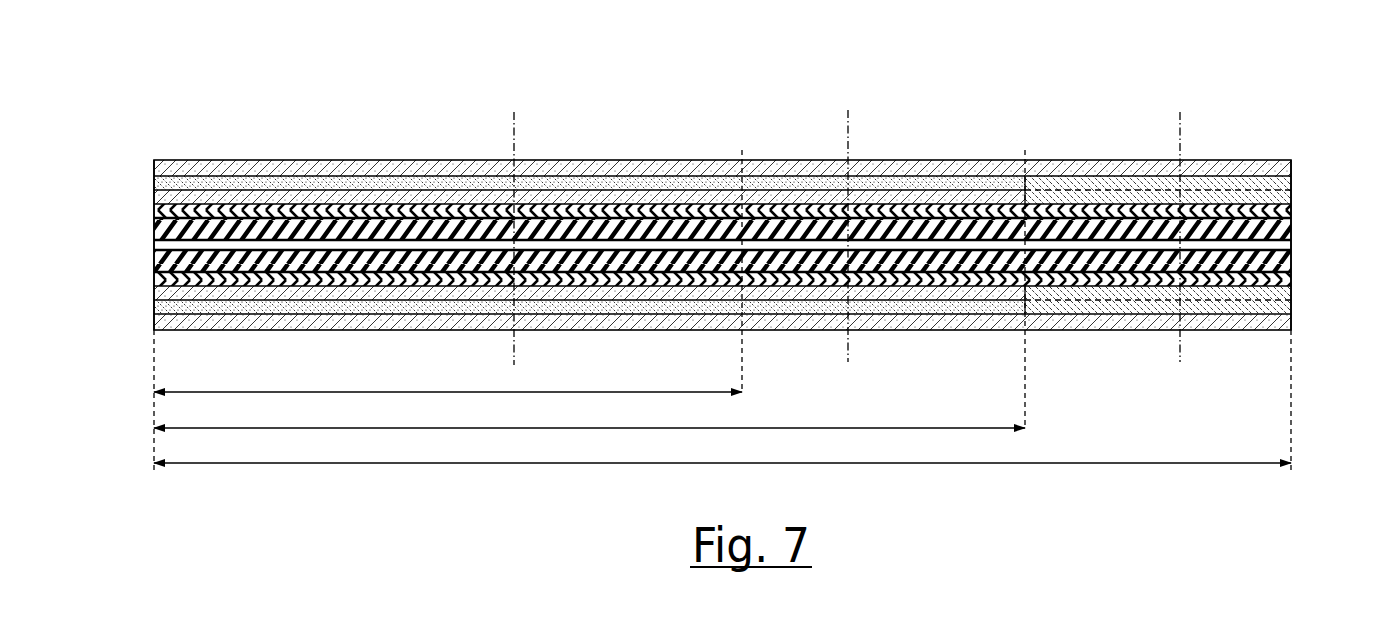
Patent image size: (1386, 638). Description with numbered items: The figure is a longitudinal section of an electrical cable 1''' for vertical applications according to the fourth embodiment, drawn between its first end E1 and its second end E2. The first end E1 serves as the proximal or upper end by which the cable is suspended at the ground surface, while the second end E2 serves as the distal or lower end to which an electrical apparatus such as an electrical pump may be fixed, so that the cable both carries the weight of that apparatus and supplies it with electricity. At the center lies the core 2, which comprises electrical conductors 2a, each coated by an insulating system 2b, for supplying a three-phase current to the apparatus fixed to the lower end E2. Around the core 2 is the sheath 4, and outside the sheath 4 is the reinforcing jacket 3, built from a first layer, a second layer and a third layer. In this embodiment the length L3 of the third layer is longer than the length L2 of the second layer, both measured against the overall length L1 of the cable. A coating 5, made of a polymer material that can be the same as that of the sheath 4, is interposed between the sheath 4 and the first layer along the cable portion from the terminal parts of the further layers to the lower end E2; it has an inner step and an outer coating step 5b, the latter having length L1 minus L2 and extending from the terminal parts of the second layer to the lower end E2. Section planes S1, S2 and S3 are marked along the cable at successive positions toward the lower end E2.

The electrical cable 1''' is at (729, 183).
The core 2 is at (722, 235).
The electrical conductors 2a is at (349, 243).
The insulating system 2b is at (246, 266).
The reinforcing jacket 3 is at (722, 207).
The sheath 4 is at (310, 216).
The coating 5 is at (1193, 236).
The outer coating step 5b is at (1258, 303).
The first end E1 is at (137, 225).
The second end E2 is at (1307, 223).
The first section S1 is at (505, 138).
The second section S2 is at (839, 138).
The third section S3 is at (1171, 138).
The length L1 is at (722, 400).
The length of the second layer L2 is at (448, 271).
The length of the third layer L3 is at (589, 289).